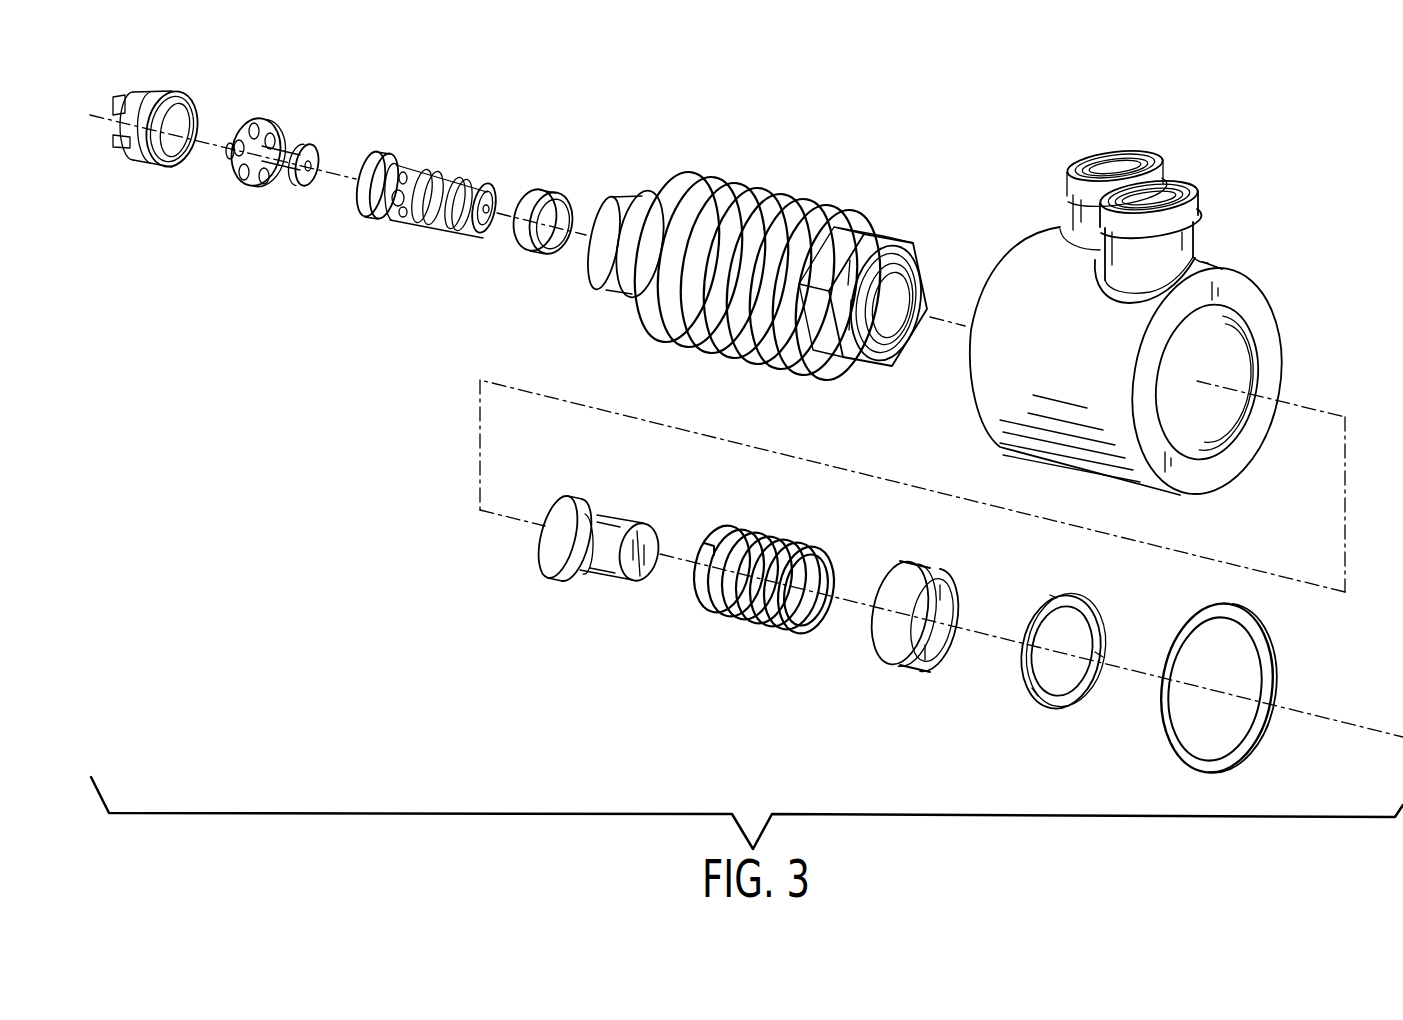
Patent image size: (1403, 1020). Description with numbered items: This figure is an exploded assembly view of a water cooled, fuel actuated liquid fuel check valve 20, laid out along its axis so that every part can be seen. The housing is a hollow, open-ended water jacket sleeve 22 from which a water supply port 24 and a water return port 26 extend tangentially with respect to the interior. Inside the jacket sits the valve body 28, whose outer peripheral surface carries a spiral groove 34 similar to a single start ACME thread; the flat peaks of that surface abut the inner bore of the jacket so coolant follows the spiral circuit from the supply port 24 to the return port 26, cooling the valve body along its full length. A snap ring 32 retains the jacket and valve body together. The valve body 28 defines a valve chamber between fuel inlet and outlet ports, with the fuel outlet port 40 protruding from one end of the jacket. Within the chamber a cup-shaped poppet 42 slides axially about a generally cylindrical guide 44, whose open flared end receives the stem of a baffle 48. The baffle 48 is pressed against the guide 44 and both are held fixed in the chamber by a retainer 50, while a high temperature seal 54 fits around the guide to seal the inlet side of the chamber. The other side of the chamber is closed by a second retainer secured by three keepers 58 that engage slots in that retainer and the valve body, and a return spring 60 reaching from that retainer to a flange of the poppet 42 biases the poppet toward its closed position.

The liquid fuel check valve 20 is at (1177, 91).
The water jacket sleeve 22 is at (1156, 323).
The water supply port 24 is at (1148, 163).
The water return port 26 is at (1180, 189).
The valve body 28 is at (774, 276).
The snap ring 32 is at (1183, 765).
The spiral groove 34 is at (793, 215).
The fuel outlet port 40 is at (892, 353).
The poppet 42 is at (598, 573).
The guide 44 is at (452, 172).
The baffle 48 is at (263, 177).
The retainer 50 is at (148, 170).
The high temperature seal 54 is at (532, 255).
The keepers 58 is at (1087, 610).
The return spring 60 is at (745, 610).